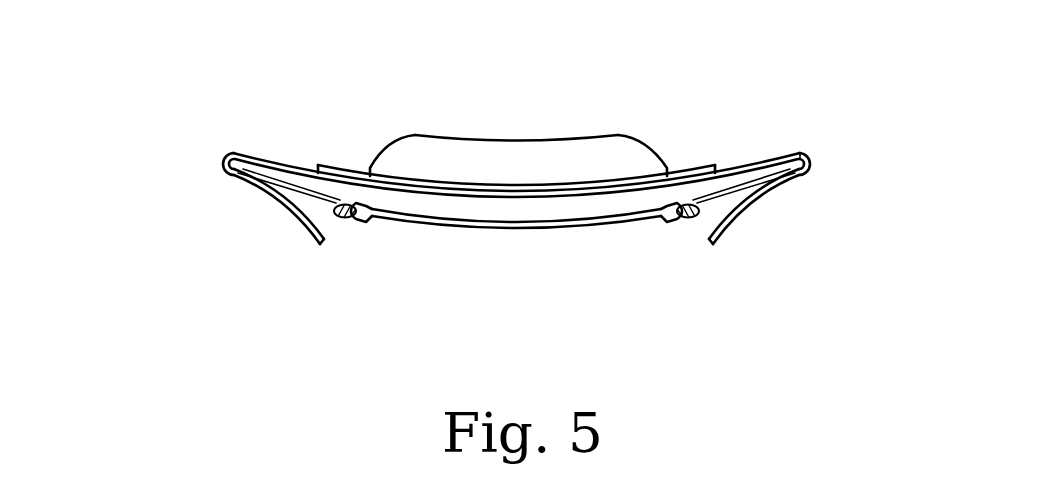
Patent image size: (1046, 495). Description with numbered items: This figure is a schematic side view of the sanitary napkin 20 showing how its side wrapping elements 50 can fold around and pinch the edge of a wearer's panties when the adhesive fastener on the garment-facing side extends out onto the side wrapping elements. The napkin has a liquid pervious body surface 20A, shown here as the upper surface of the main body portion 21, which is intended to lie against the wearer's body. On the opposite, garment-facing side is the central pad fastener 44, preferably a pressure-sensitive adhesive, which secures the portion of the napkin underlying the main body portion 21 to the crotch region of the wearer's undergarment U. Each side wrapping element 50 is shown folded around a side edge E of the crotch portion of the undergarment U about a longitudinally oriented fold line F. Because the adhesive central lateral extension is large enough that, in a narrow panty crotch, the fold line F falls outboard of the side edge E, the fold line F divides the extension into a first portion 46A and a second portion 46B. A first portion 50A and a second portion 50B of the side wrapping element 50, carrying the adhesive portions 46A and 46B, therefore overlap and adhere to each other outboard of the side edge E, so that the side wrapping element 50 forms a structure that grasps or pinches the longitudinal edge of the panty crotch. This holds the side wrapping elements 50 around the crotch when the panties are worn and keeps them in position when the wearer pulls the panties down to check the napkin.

The sanitary napkin 20 is at (654, 108).
The body surface 20A is at (486, 134).
The main body portion 21 is at (510, 160).
The central pad fastener 44 is at (645, 199).
The first portion of central lateral extension 46A is at (748, 202).
The second portion of central lateral extension 46B is at (700, 222).
The side wrapping element 50 is at (198, 146).
The first portion of side wrapping element 50A is at (747, 165).
The second portion of side wrapping element 50B is at (741, 191).
The side edge of crotch portion of undergarment E is at (347, 214).
The fold line F is at (811, 162).
The undergarment U is at (455, 262).